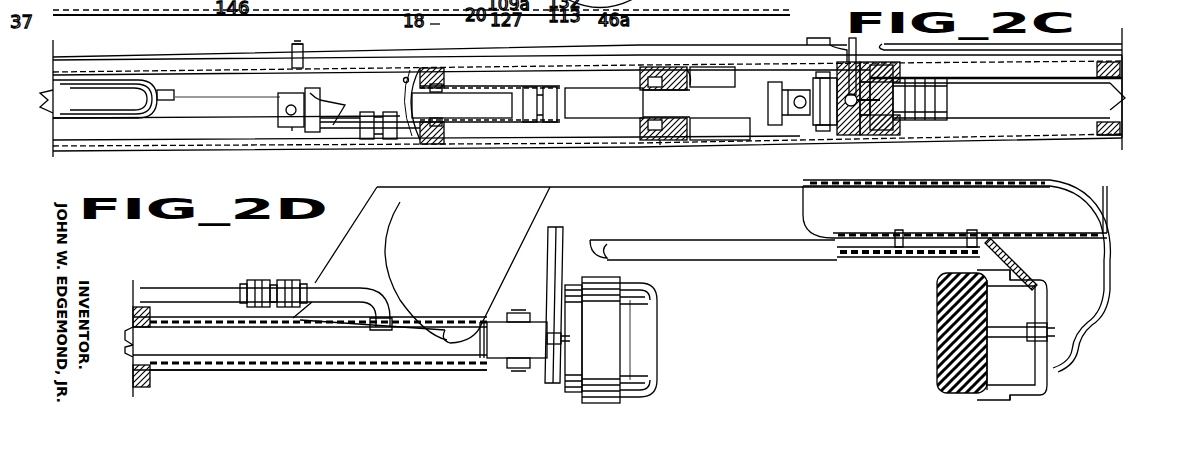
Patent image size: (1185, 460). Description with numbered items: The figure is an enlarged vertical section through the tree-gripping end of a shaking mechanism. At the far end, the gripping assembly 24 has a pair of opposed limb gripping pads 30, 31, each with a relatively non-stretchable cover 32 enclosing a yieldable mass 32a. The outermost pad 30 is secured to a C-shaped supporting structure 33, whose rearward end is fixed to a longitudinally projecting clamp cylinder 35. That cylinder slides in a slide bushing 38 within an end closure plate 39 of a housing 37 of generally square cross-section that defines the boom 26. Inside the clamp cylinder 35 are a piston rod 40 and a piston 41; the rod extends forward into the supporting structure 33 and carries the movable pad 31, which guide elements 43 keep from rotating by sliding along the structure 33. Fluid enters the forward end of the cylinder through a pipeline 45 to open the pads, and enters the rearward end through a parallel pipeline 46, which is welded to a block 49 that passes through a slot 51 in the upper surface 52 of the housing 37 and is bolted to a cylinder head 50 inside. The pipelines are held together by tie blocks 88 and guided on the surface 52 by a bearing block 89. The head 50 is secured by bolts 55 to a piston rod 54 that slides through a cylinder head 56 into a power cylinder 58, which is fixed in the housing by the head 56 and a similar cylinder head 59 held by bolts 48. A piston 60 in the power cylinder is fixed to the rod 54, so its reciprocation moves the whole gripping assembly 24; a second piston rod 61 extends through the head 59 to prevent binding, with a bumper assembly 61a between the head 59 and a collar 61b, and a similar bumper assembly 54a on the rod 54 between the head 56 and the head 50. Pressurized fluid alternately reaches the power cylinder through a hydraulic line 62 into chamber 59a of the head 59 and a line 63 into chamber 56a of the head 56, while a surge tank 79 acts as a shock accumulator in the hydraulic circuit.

In FIG. 2C, the boom 26 is at (1018, 48).
In FIG. 2C, the pipeline 45 is at (185, 53).
In FIG. 2D, the pipeline 45 is at (195, 287).
In FIG. 2C, the pipeline 46 is at (72, 59).
In FIG. 2C, the housing 37 is at (148, 116).
In FIG. 2C, the slide bushing 38 is at (1112, 70).
In FIG. 2D, the slide bushing 38 is at (148, 365).
In FIG. 2C, the end closure plate 39 is at (1106, 136).
In FIG. 2C, the piston rod 40 is at (1065, 103).
In FIG. 2D, the piston rod 40 is at (283, 355).
In FIG. 2C, the piston 41 is at (930, 104).
In FIG. 2C, the clamp cylinder 35 is at (1077, 118).
In FIG. 2D, the clamp cylinder 35 is at (310, 371).
In FIG. 2C, the surge tank 79 is at (113, 96).
In FIG. 2C, the hydraulic line 63 is at (192, 128).
In FIG. 2C, the bearing block 89 is at (292, 58).
In FIG. 2C, the second piston rod 61 is at (343, 96).
In FIG. 2C, the bumper assembly 61a is at (310, 93).
In FIG. 2C, the collar 61b is at (292, 128).
In FIG. 2C, the hydraulic line 62 is at (285, 110).
In FIG. 2C, the bolts 48 is at (400, 79).
In FIG. 2C, the cylinder head 59 is at (424, 106).
In FIG. 2C, the chamber 59a is at (412, 137).
In FIG. 2C, the tie blocks 88 is at (490, 104).
In FIG. 2C, the piston 60 is at (500, 104).
In FIG. 2C, the power cylinder 58 is at (590, 120).
In FIG. 2C, the piston rod 54 is at (680, 114).
In FIG. 2C, the bumper assembly 54a is at (780, 75).
In FIG. 2C, the cylinder head 56 is at (681, 103).
In FIG. 2C, the chamber 56a is at (660, 144).
In FIG. 2C, the upper surface 52 is at (720, 103).
In FIG. 2C, the slot 51 is at (768, 78).
In FIG. 2C, the bolts 55 is at (802, 118).
In FIG. 2C, the cylinder head 50 is at (845, 133).
In FIG. 2C, the block 49 is at (851, 48).
In FIG. 2D, the gripping assembly 24 is at (338, 247).
In FIG. 2D, the guide elements 43 is at (560, 236).
In FIG. 2D, the cover 32 is at (660, 318).
In FIG. 2D, the yieldable mass 32a is at (936, 323).
In FIG. 2D, the limb gripping pad 31 is at (648, 340).
In FIG. 2D, the C-shaped supporting structure 33 is at (903, 215).
In FIG. 2D, the limb gripping pad 30 is at (935, 350).